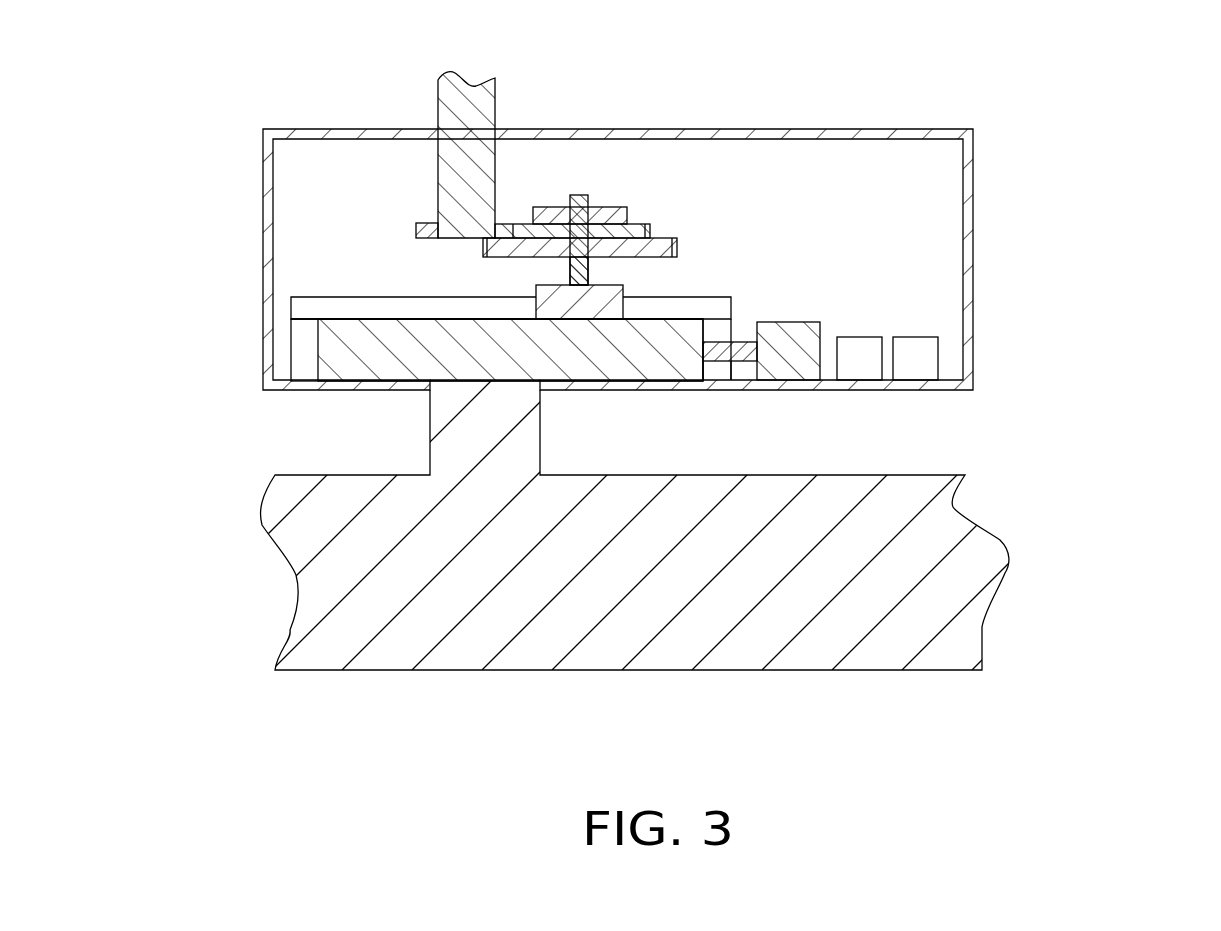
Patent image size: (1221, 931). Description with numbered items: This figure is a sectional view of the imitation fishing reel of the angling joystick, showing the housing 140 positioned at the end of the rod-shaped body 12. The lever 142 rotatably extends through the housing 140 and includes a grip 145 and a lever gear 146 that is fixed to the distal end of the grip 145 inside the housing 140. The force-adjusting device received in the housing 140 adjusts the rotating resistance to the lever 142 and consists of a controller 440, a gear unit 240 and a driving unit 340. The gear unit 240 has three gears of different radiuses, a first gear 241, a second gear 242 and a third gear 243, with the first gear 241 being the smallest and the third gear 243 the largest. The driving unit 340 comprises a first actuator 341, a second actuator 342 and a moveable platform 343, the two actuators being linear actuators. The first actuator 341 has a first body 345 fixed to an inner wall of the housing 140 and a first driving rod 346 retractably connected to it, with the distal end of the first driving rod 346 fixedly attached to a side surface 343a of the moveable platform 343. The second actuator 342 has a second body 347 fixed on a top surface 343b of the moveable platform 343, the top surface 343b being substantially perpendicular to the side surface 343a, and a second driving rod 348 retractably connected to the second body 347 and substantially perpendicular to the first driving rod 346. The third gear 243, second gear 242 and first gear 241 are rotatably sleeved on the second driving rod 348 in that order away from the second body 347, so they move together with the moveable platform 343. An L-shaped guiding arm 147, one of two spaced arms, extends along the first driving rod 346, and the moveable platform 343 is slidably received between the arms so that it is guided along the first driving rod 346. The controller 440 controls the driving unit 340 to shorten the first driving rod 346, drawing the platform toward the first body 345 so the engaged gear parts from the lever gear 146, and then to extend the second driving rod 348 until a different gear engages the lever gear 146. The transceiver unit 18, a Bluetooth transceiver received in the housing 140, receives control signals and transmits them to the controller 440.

The rod-shaped body 12 is at (982, 560).
The transceiver unit 18 is at (920, 365).
The housing 140 is at (940, 130).
The lever 142 is at (353, 130).
The grip 145 is at (450, 92).
The lever gear 146 is at (427, 223).
The guiding arm 147 is at (322, 305).
The gear unit 240 is at (617, 146).
The first gear 241 is at (602, 207).
The second gear 242 is at (634, 224).
The third gear 243 is at (542, 65).
The driving unit 340 is at (872, 285).
The first actuator 341 is at (918, 321).
The second actuator 342 is at (834, 254).
The moveable platform 343 is at (337, 363).
The side surface 343a is at (712, 369).
The top surface 343b is at (390, 316).
The first body 345 is at (805, 346).
The first driving rod 346 is at (733, 343).
The second body 347 is at (623, 311).
The second driving rod 348 is at (590, 273).
The controller 440 is at (857, 367).